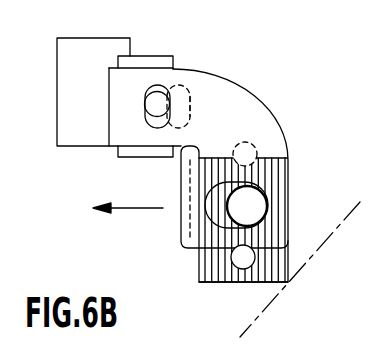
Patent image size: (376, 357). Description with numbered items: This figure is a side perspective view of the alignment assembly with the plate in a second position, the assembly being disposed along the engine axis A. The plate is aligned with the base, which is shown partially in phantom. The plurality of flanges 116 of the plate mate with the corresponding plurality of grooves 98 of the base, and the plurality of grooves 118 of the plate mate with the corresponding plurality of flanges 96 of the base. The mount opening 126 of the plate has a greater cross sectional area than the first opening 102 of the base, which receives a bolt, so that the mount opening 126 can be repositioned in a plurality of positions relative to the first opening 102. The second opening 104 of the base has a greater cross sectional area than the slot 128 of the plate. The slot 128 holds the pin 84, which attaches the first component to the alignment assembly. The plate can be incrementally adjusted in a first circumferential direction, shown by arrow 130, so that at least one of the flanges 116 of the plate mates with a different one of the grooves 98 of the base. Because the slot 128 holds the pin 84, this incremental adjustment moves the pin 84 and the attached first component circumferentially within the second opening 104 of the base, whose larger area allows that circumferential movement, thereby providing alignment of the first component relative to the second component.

The slot 128 is at (157, 88).
The pin 84 is at (160, 100).
The second opening 104 is at (186, 113).
The first opening 102 is at (253, 207).
The arrow 130 is at (130, 206).
The mount opening 126 is at (205, 211).
The plurality of flanges 116 is at (188, 238).
The plurality of grooves 118 is at (194, 252).
The plurality of grooves 98 is at (208, 283).
The plurality of flanges 96 is at (223, 283).
The engine axis A is at (287, 280).